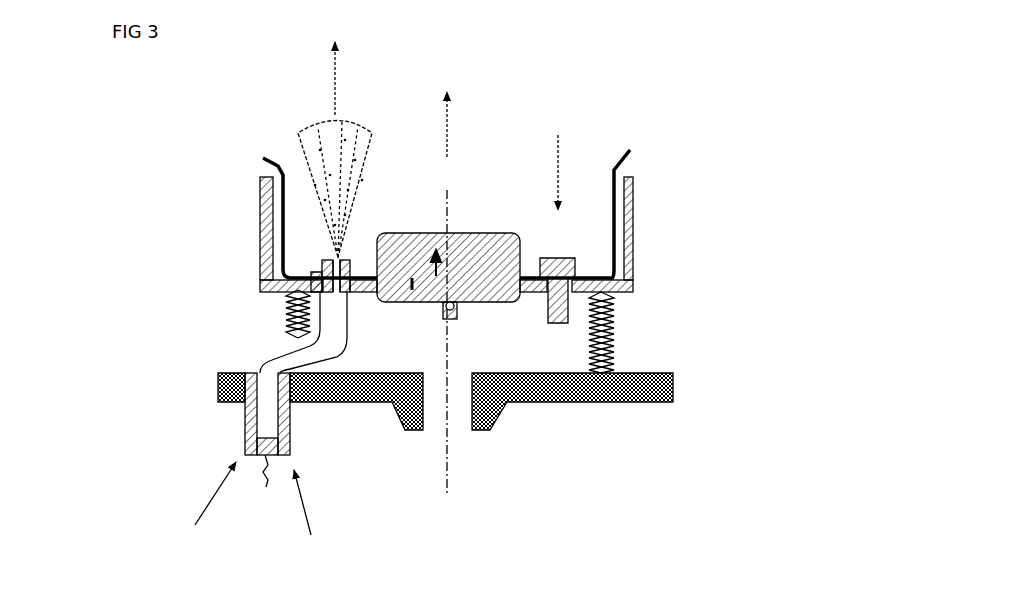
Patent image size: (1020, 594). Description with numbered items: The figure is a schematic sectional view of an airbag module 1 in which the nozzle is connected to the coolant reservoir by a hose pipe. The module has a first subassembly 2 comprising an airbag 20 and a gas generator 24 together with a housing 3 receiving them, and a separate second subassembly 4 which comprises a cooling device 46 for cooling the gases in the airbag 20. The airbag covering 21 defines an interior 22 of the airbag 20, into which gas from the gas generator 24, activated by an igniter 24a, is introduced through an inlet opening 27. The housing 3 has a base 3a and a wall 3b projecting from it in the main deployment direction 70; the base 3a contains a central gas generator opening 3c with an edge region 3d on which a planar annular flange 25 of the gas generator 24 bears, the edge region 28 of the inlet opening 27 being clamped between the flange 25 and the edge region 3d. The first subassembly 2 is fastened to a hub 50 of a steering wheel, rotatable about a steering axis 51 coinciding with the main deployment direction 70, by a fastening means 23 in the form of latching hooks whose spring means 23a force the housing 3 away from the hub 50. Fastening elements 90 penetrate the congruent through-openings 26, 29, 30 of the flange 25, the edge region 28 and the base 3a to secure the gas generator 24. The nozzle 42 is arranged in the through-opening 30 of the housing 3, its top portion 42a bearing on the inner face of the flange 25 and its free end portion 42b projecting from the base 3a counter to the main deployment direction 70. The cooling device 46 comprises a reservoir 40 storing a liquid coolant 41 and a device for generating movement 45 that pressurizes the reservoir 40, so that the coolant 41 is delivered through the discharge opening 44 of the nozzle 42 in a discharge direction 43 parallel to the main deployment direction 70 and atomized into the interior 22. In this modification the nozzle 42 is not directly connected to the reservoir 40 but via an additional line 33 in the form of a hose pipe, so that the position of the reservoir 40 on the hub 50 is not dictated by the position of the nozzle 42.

The airbag module 1 is at (177, 198).
The first subassembly 2 is at (652, 212).
The housing 3 is at (633, 197).
The base 3a is at (572, 324).
The wall 3b is at (258, 238).
The gas generator opening 3c is at (412, 276).
The edge region 3d is at (537, 290).
The second subassembly 4 is at (305, 516).
The airbag 20 is at (631, 152).
The airbag covering 21 is at (613, 172).
The interior 22 is at (558, 159).
The fastening means 23 is at (258, 313).
The spring means 23a is at (292, 326).
The gas generator 24 is at (467, 240).
The igniter 24a is at (456, 305).
The flange 25 is at (358, 268).
The through-opening 26 is at (572, 270).
The inlet opening 27 is at (434, 246).
The edge region 28 is at (531, 264).
The through-opening 29 is at (615, 289).
The through-opening 30 is at (290, 289).
The line 33 is at (262, 362).
The reservoir 40 is at (245, 440).
The coolant 41 is at (350, 143).
The nozzle 42 is at (346, 300).
The top portion 42a is at (322, 262).
The free end portion 42b is at (336, 300).
The discharge direction 43 is at (319, 78).
The discharge opening 44 is at (318, 205).
The device for generating movement 45 is at (263, 456).
The cooling device 46 is at (203, 507).
The hub 50 is at (637, 396).
The steering axis 51 is at (450, 470).
The main deployment direction 70 is at (463, 124).
The fastening elements 90 is at (558, 324).